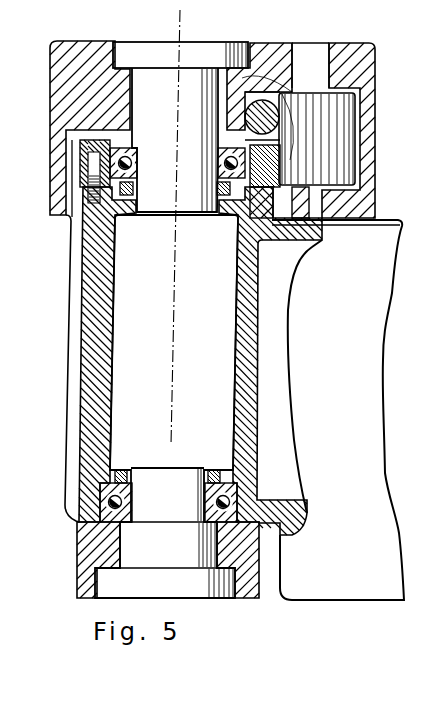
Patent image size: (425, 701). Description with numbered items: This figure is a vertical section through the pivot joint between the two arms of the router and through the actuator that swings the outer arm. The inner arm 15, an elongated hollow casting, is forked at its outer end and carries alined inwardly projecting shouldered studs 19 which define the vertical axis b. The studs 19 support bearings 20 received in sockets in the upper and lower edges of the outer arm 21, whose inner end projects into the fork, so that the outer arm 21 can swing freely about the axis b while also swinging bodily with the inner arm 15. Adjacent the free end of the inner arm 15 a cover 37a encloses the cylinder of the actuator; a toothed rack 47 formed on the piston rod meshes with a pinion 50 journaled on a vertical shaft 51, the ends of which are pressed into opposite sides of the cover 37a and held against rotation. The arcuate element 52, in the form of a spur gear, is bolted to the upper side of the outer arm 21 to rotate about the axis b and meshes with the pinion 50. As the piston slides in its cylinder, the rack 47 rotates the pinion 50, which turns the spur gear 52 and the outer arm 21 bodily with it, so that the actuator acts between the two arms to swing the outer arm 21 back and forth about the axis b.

The inner arm 15 is at (68, 421).
The studs 19 is at (169, 214).
The bearings 20 is at (133, 163).
The outer arm 21 is at (353, 600).
The cover 37a is at (377, 108).
The toothed rack 47 is at (252, 110).
The pinion 50 is at (354, 133).
The vertical shaft 51 is at (326, 48).
The arcuate element 52 is at (78, 158).
The vertical axis b is at (173, 381).